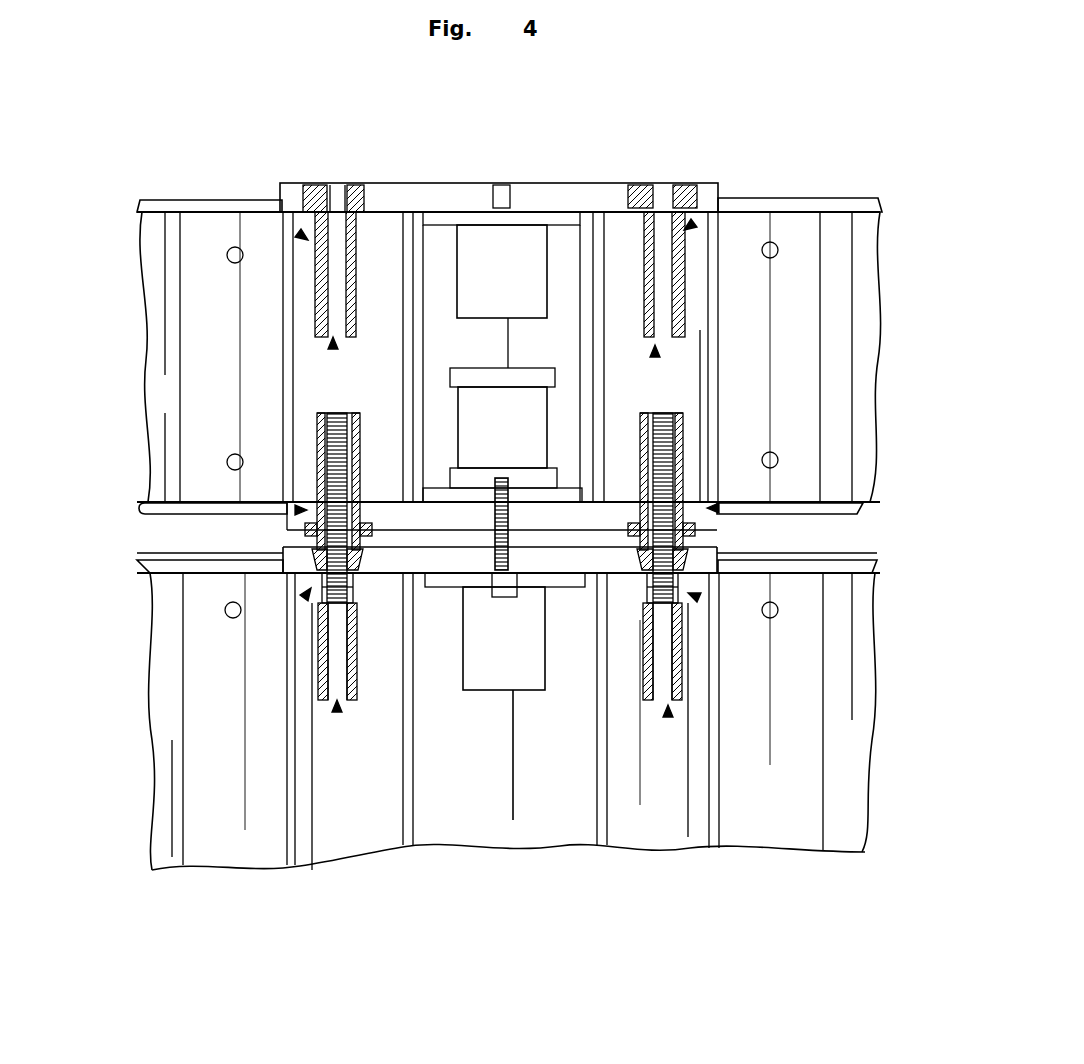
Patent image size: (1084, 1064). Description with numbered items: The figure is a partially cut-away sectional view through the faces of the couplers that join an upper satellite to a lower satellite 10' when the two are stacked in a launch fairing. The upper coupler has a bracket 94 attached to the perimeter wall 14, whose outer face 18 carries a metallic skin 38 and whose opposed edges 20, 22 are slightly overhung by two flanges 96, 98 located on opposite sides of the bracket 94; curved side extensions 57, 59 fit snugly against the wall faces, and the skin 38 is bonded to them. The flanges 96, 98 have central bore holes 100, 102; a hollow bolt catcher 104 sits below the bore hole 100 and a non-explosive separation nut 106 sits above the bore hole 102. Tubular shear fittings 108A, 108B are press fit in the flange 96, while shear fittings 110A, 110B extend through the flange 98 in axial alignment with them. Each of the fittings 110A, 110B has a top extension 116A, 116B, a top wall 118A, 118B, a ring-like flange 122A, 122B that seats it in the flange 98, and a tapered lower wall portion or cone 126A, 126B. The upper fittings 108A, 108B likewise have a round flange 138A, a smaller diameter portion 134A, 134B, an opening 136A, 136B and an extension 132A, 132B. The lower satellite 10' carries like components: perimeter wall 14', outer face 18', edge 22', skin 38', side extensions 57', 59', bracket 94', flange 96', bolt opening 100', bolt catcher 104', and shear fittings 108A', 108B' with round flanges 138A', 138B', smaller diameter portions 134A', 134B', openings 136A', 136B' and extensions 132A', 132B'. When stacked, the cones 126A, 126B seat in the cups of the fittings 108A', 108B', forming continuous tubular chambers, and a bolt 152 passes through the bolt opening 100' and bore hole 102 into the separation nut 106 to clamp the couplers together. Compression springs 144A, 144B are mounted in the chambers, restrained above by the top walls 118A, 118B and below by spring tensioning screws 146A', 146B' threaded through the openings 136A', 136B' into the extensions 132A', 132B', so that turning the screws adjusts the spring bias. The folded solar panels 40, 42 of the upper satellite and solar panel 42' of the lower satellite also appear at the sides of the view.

The lower satellite 10' is at (538, 990).
The perimeter wall 14 is at (806, 350).
The perimeter wall 14' is at (818, 706).
The outer face 18 is at (889, 170).
The outer face 18' is at (865, 894).
The edge 20 is at (143, 504).
The edge 22 is at (838, 187).
The edge 22' is at (900, 595).
The metallic skin 38 is at (158, 357).
The metallic skin 38' is at (851, 760).
The solar panel 40 is at (855, 517).
The solar panel 42 is at (771, 187).
The solar panel 42' is at (900, 571).
The curved side extension 57 is at (208, 363).
The curved side extension 57' is at (211, 753).
The curved side extension 59 is at (746, 369).
The curved side extension 59' is at (801, 751).
The bracket 94 is at (488, 290).
The bracket 94' is at (474, 709).
The flange 96 is at (499, 148).
The flange 96' is at (500, 560).
The flange 98 is at (436, 529).
The bore hole 100 is at (501, 330).
The bolt opening 100' is at (518, 737).
The bore hole 102 is at (435, 225).
The hollow bolt catcher 104 is at (523, 246).
The hollow bolt catcher 104' is at (521, 753).
The non-explosive separation nut 106 is at (481, 407).
The tubular shear fitting 108A is at (225, 184).
The tubular shear fitting 108B is at (758, 176).
The tubular shear fitting 108A' is at (187, 639).
The tubular shear fitting 108B' is at (824, 630).
The tubular shear fitting 110A is at (295, 510).
The tubular shear fitting 110B is at (719, 507).
The top extension 116A is at (306, 430).
The top extension 116B is at (707, 473).
The top wall 118A is at (333, 349).
The top wall 118B is at (688, 417).
The ring-like flange 122A is at (380, 530).
The ring-like flange 122B is at (700, 538).
The lower wall portion (cone) 126A is at (318, 527).
The lower wall portion (cone) 126B is at (655, 357).
The extension 132A is at (194, 244).
The extension 132B is at (817, 265).
The extension 132A' is at (195, 689).
The extension 132B' is at (744, 773).
The smaller diameter portion 134A is at (272, 146).
The smaller diameter portion 134B is at (717, 168).
The smaller diameter portion 134A' is at (208, 579).
The smaller diameter portion 134B' is at (616, 774).
The opening 136A is at (212, 316).
The opening 136B is at (683, 211).
The opening 136A' is at (256, 778).
The opening 136B' is at (686, 515).
The round flange portion 138A is at (326, 161).
The round flange portion 138B' is at (806, 607).
The round flange portion 138A' is at (388, 742).
The compression spring 144A is at (338, 412).
The compression spring 144B is at (660, 413).
The spring tensioning screw 146A' is at (314, 773).
The spring tensioning screw 146B' is at (672, 797).
The bolt 152 is at (447, 860).